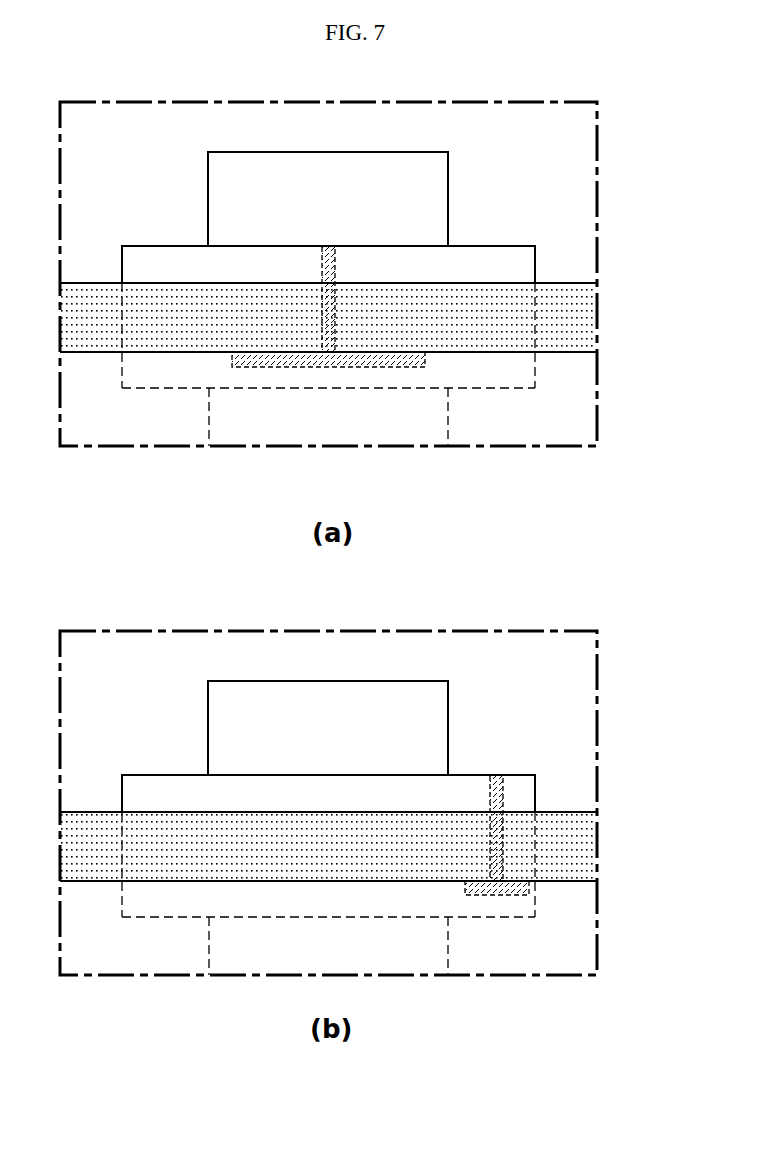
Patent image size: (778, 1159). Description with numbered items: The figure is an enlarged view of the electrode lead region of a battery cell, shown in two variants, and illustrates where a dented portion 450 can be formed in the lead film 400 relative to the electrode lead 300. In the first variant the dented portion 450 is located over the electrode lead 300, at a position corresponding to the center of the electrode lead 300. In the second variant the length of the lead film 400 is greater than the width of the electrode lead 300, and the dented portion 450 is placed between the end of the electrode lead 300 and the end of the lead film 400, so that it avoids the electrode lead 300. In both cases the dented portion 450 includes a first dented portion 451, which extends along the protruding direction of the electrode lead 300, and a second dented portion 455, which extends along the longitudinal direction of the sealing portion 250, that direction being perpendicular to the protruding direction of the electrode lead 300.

The electrode lead 300 is at (430, 200).
The lead film 400 is at (525, 268).
The sealing portion 250 is at (580, 313).
The dented portion 450 is at (380, 653).
The first dented portion 451 is at (335, 262).
The second dented portion 455 is at (408, 367).